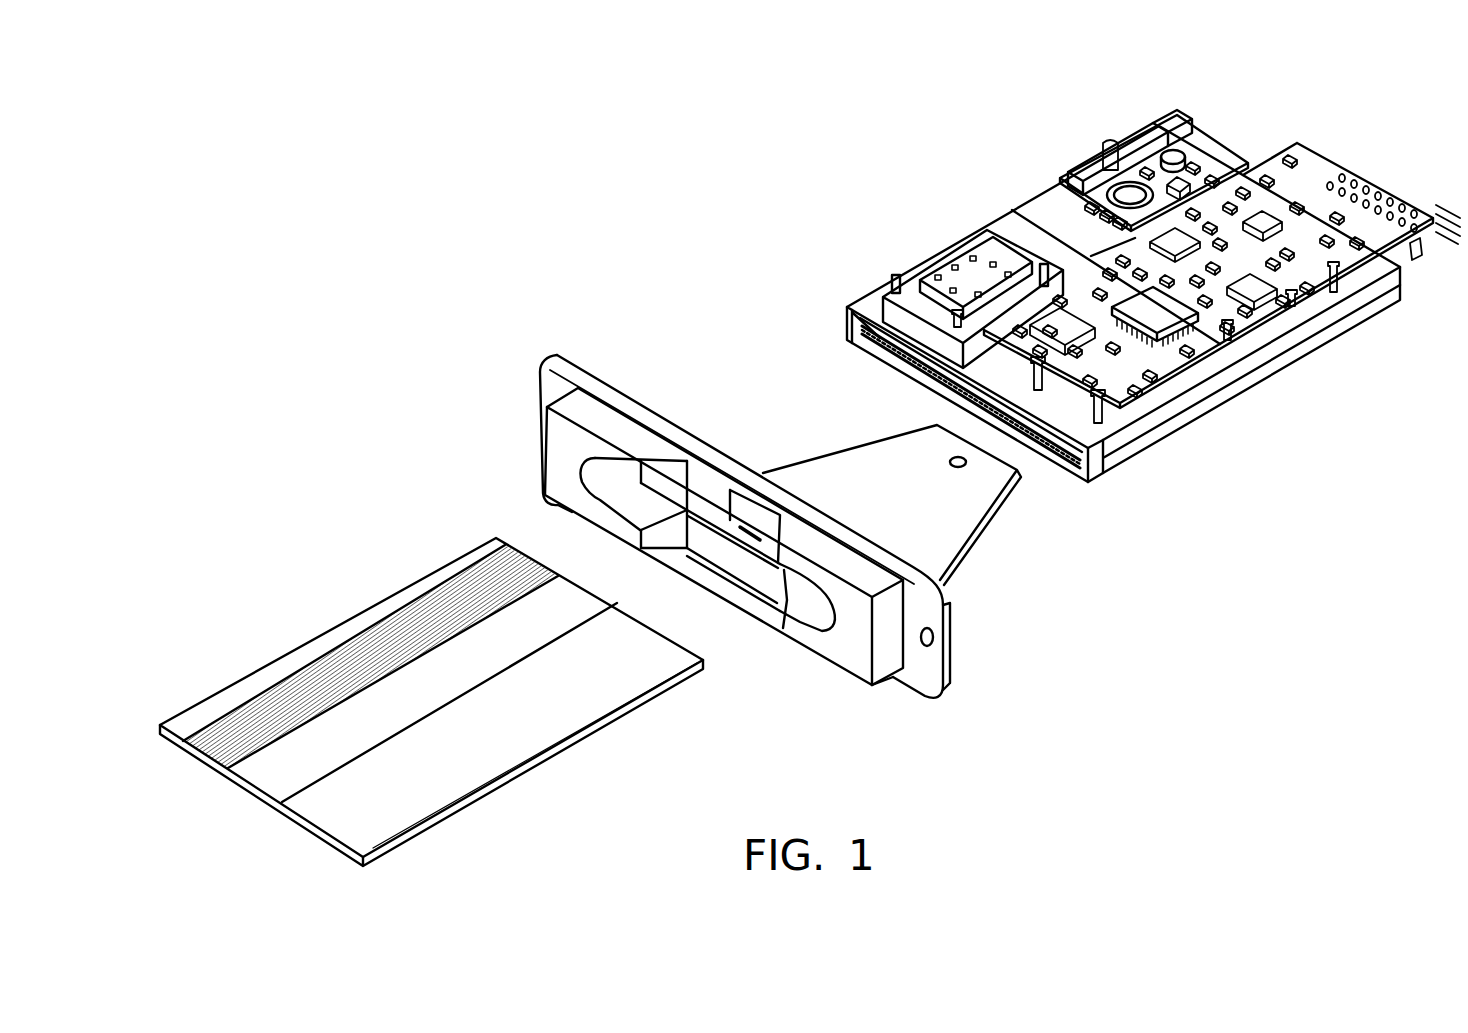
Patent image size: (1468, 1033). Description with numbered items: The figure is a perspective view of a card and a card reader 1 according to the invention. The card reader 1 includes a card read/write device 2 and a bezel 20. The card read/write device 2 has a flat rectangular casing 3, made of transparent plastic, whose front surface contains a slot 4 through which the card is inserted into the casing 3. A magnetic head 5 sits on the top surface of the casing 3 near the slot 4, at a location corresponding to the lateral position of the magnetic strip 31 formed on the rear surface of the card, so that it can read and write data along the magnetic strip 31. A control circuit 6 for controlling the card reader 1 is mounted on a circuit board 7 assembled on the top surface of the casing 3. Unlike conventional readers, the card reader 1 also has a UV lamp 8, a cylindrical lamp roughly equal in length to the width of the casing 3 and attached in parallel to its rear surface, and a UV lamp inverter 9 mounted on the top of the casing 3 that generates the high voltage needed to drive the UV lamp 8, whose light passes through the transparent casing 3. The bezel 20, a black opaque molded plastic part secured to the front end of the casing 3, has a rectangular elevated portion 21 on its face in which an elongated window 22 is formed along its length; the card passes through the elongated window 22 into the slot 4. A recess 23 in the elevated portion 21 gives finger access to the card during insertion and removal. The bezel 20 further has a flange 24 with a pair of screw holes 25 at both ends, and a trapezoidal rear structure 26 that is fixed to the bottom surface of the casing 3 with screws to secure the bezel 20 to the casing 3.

The card reader 1 is at (1052, 208).
The card read/write device 2 is at (1302, 392).
The casing 3 is at (1120, 450).
The slot 4 is at (853, 338).
The magnetic head 5 is at (973, 275).
The control circuit 6 is at (1164, 311).
The circuit board 7 is at (1330, 158).
The UV lamp 8 is at (1207, 150).
The UV lamp inverter 9 is at (1190, 148).
The bezel 20 is at (950, 600).
The elevated portion 21 is at (853, 647).
The elongated window 22 is at (733, 524).
The recess 23 is at (674, 482).
The flange 24 is at (927, 667).
The screw holes 25 is at (933, 640).
The trapezoidal rear structure 26 is at (960, 520).
The magnetic strip 31 is at (340, 648).